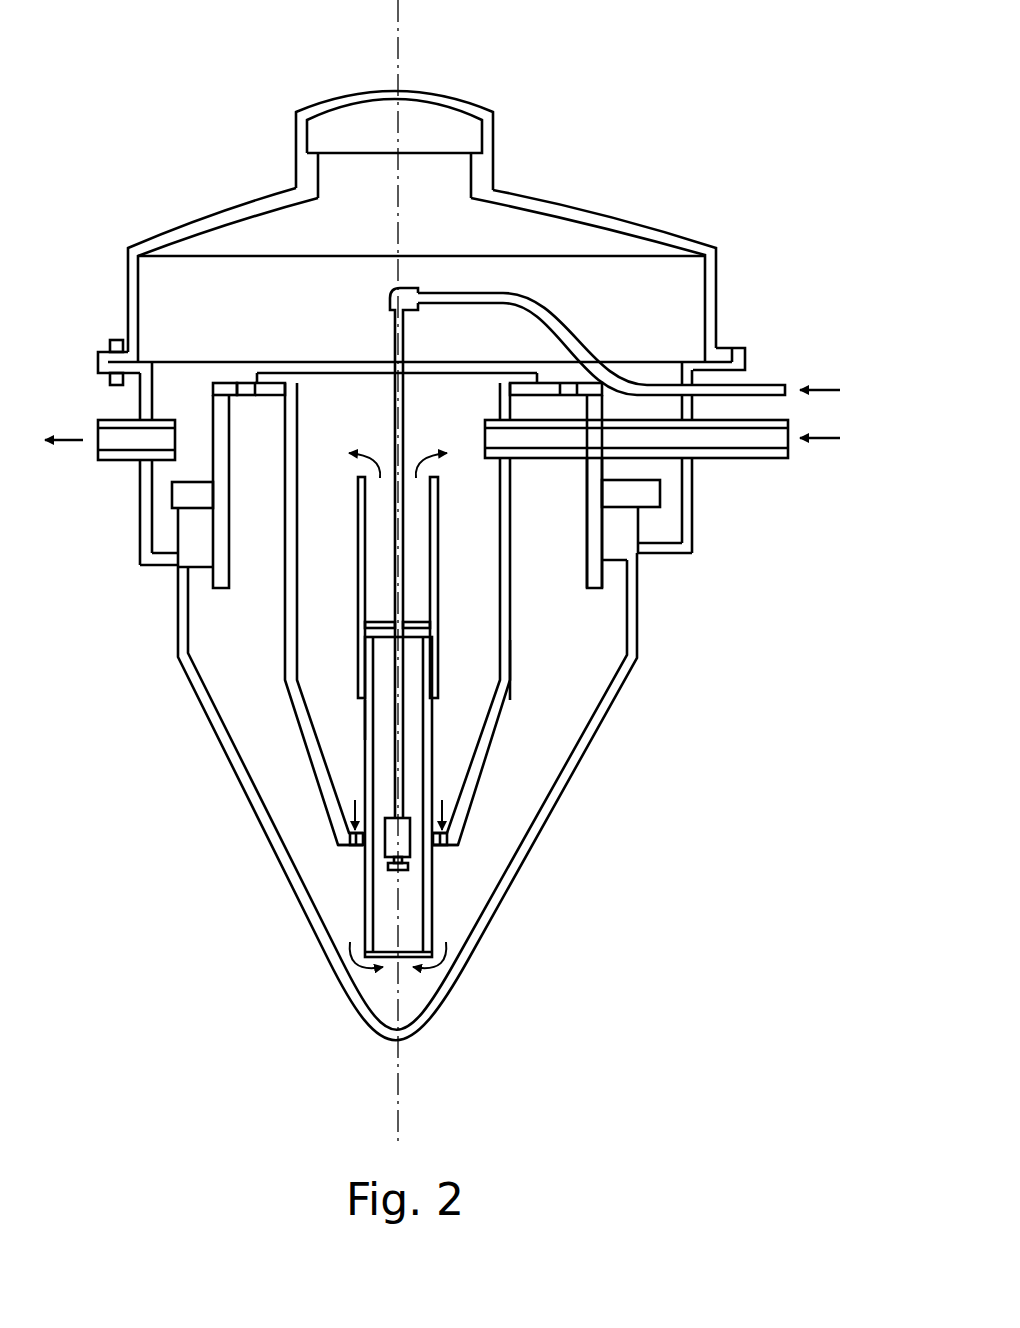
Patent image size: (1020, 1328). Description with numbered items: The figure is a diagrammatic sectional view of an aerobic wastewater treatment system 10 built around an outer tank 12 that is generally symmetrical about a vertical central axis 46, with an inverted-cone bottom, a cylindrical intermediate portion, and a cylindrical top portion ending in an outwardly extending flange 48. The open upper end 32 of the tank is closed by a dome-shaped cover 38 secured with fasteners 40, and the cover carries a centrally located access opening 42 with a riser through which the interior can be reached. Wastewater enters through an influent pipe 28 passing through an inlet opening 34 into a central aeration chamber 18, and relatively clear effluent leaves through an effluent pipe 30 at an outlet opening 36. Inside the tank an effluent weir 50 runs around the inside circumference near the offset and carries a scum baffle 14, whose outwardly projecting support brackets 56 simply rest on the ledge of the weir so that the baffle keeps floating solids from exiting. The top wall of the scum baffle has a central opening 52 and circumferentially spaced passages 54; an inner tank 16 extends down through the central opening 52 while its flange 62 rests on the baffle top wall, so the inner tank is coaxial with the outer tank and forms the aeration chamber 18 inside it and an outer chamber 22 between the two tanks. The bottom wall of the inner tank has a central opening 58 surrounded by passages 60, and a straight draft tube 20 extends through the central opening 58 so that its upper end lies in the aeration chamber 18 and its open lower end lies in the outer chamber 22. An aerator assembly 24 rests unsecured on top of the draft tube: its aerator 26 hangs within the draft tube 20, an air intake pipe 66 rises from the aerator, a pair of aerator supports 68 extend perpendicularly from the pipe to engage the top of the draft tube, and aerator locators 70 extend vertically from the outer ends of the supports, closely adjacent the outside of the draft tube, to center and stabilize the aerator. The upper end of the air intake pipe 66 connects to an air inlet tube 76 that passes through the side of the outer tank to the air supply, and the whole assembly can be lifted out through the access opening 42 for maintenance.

The aerobic wastewater treatment system 10 is at (697, 850).
The outer tank 12 is at (603, 718).
The scum baffle 14 is at (668, 488).
The inner tank 16 is at (512, 650).
The aeration chamber 18 is at (433, 413).
The draft tube 20 is at (362, 722).
The outer chamber 22 is at (480, 885).
The aerator assembly 24 is at (386, 321).
The aerator 26 is at (385, 845).
The influent pipe 28 is at (787, 458).
The effluent pipe 30 is at (118, 460).
The open upper end 32 is at (666, 358).
The inlet opening 34 is at (697, 406).
The outlet opening 36 is at (140, 420).
The cover 38 is at (645, 221).
The fasteners 40 is at (113, 340).
The access opening 42 is at (455, 150).
The central axis 46 is at (405, 32).
The flange 48 is at (745, 350).
The effluent weir 50 is at (203, 568).
The central opening 52 is at (247, 383).
The passages 54 is at (228, 383).
The support brackets 56 is at (172, 495).
The central opening 58 is at (361, 846).
The passages 60 is at (350, 836).
The flange 62 is at (540, 383).
The air intake pipe 66 is at (395, 342).
The aerator supports 68 is at (378, 626).
The aerator locators 70 is at (358, 542).
The air inlet tube 76 is at (585, 330).